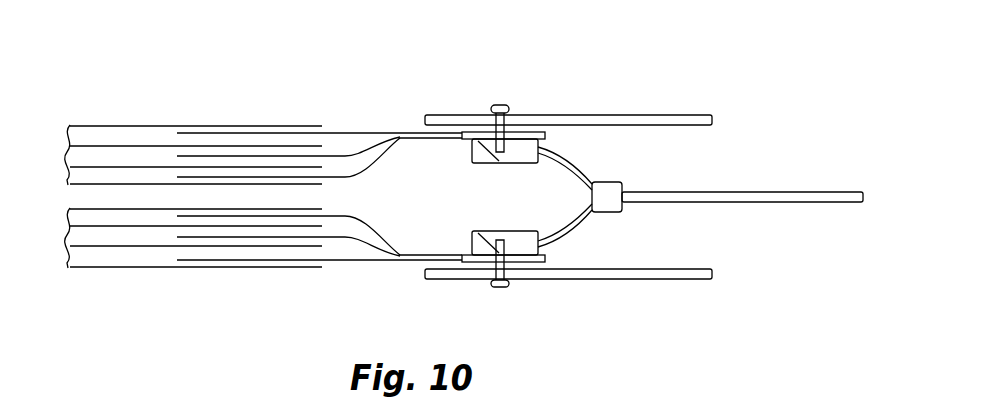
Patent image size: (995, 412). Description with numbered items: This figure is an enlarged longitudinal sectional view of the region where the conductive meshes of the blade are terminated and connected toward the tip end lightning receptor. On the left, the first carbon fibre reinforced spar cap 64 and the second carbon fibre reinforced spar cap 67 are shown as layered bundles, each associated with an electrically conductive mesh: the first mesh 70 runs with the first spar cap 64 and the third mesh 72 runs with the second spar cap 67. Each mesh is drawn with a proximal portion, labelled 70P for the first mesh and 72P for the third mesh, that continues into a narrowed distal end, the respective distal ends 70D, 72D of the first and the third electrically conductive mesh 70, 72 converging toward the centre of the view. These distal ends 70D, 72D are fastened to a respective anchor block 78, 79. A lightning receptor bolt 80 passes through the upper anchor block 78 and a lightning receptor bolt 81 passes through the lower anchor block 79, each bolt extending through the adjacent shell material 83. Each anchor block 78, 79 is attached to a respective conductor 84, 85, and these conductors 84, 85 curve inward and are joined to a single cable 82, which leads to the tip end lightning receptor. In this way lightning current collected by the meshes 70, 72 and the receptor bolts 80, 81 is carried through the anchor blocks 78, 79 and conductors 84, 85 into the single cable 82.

The first carbon fibre reinforced spar cap 64 is at (103, 258).
The second carbon fibre reinforced spar cap 67 is at (99, 128).
The first mesh 70 is at (394, 259).
The proximal portion of second elongate member 70P is at (243, 259).
The distal end of first mesh 70D is at (410, 262).
The third mesh 72 is at (395, 137).
The proximal portion of first elongate member 72P is at (280, 133).
The distal end of third mesh 72D is at (417, 133).
The anchor block 78 is at (482, 150).
The anchor block 79 is at (483, 240).
The lightning receptor bolt 80 is at (502, 105).
The lightning receptor bolt 81 is at (505, 287).
The cable to tip end lightning receptor 82 is at (768, 193).
The shell material 83 is at (632, 115).
The conductor 84 is at (578, 163).
The conductor 85 is at (578, 227).